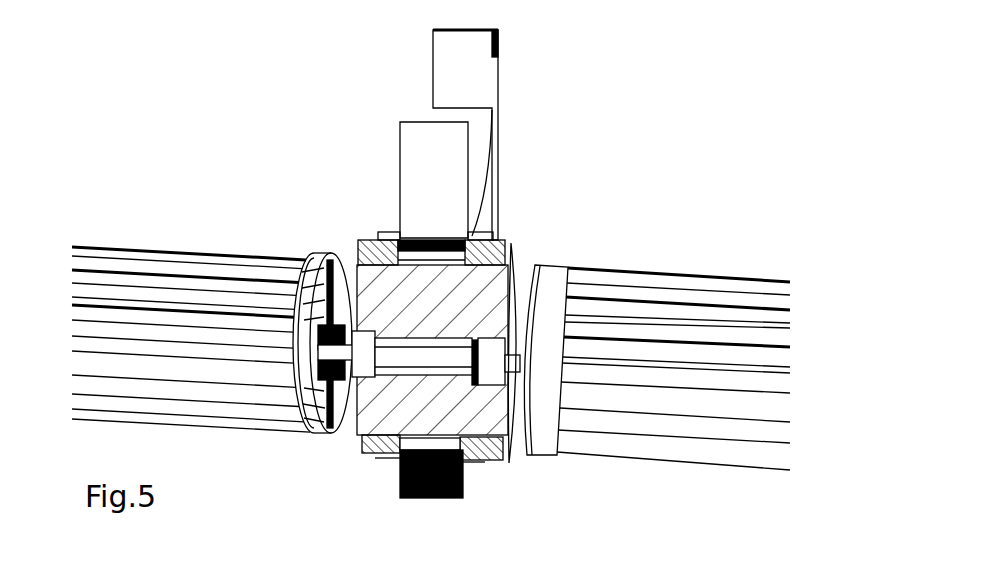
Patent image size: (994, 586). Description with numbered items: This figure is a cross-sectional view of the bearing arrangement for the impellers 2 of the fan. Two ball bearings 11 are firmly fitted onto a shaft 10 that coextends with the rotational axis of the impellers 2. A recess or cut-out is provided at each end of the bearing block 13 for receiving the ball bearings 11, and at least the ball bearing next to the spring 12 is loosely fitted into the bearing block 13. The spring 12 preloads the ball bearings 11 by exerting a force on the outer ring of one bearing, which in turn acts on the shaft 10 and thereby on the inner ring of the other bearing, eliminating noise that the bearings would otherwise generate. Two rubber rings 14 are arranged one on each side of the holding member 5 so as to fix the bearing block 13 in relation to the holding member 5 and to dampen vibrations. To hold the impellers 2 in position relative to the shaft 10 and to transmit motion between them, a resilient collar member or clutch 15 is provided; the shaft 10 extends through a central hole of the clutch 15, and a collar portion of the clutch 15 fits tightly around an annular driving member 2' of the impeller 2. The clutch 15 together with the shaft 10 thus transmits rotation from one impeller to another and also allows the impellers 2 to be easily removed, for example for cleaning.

The impeller 2 is at (431, 330).
The annular driving member 2' is at (294, 404).
The holding member 5 is at (463, 497).
The shaft 10 is at (432, 352).
The ball bearing 11 is at (376, 384).
The spring 12 is at (462, 337).
The bearing block 13 is at (508, 272).
The rubber ring 14 is at (358, 242).
The resilient collar member or clutch 15 is at (343, 277).